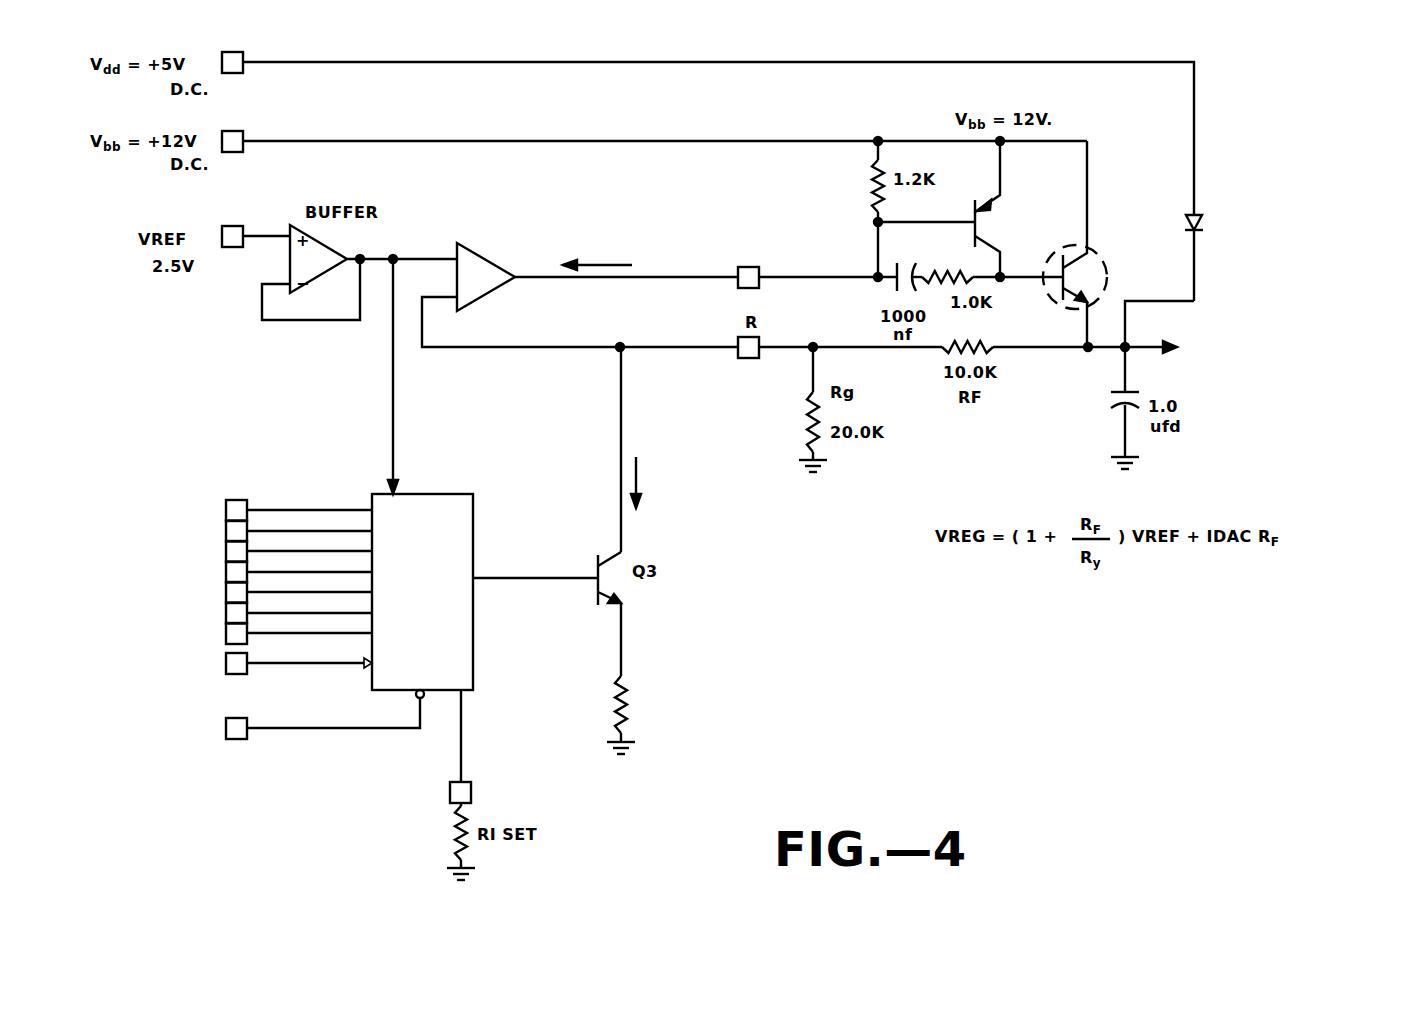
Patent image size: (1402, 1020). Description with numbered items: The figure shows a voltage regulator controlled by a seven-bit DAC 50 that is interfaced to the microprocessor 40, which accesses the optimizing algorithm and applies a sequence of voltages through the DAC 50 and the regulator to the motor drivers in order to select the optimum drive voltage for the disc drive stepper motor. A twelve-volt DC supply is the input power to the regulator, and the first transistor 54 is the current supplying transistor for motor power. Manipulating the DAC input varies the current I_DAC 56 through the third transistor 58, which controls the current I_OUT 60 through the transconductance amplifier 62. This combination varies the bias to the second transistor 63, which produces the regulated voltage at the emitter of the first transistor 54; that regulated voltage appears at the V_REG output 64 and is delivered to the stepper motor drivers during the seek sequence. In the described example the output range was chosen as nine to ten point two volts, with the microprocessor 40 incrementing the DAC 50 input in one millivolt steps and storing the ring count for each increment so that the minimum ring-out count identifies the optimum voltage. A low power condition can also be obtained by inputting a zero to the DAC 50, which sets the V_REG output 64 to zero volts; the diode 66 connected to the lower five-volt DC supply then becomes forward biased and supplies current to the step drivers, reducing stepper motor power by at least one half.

The microprocessor 40 is at (206, 579).
The 7-bit DAC 50 is at (422, 577).
The transistor Q1 54 is at (1104, 244).
The I_DAC 56 is at (662, 449).
The transistor Q3 58 is at (642, 683).
The I_OUT 60 is at (771, 257).
The transconductance amplifier 62 is at (534, 247).
The transistor Q2 63 is at (1004, 209).
The V_REG output 64 is at (1273, 355).
The diode 66 is at (1233, 258).